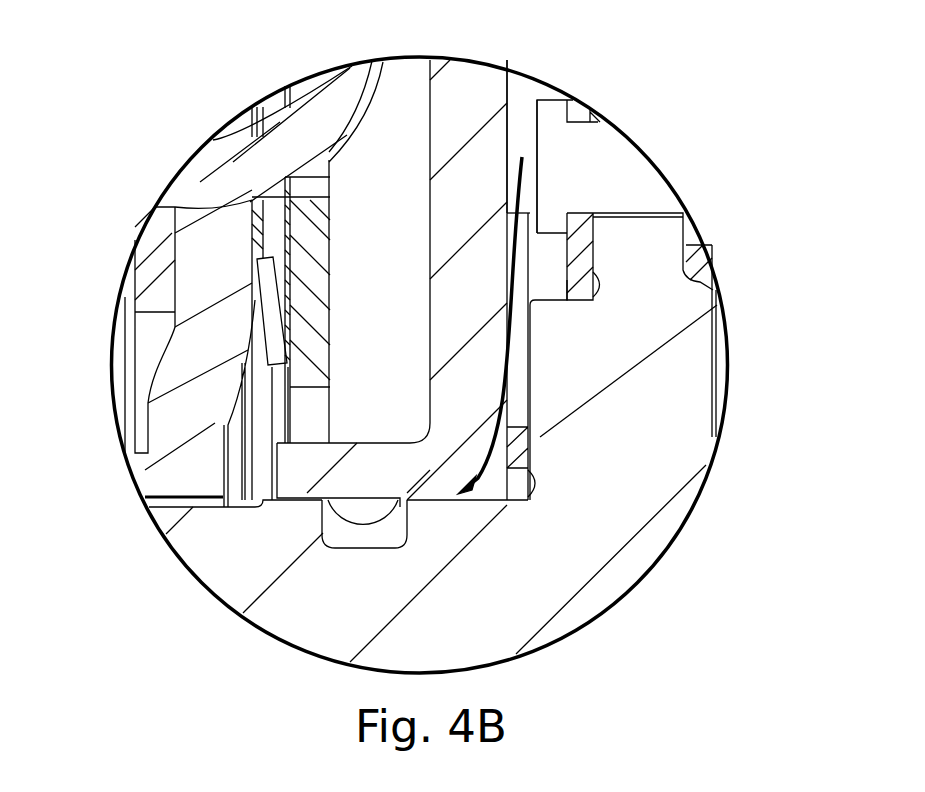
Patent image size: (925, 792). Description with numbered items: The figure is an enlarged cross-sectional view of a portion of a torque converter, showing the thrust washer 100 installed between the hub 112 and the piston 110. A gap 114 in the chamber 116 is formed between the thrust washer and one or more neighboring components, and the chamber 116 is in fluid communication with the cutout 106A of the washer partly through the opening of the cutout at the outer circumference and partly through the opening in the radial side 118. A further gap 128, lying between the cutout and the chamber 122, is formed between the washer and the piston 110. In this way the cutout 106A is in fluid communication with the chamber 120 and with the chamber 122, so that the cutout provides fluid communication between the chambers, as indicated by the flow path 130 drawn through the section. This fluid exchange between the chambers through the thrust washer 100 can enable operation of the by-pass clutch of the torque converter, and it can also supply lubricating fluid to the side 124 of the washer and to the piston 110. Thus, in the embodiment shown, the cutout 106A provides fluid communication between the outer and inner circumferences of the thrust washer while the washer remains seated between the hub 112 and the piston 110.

The thrust washer 100 is at (530, 440).
The cutout 106A is at (538, 392).
The piston 110 is at (307, 473).
The hub 112 is at (337, 612).
The gap 114 is at (537, 213).
The chamber 116 is at (527, 88).
The radial side 118 is at (530, 342).
The chamber 120 is at (607, 138).
The chamber 122 is at (492, 487).
The side 124 is at (507, 280).
The gap 128 is at (491, 412).
The flow path 130 is at (533, 172).